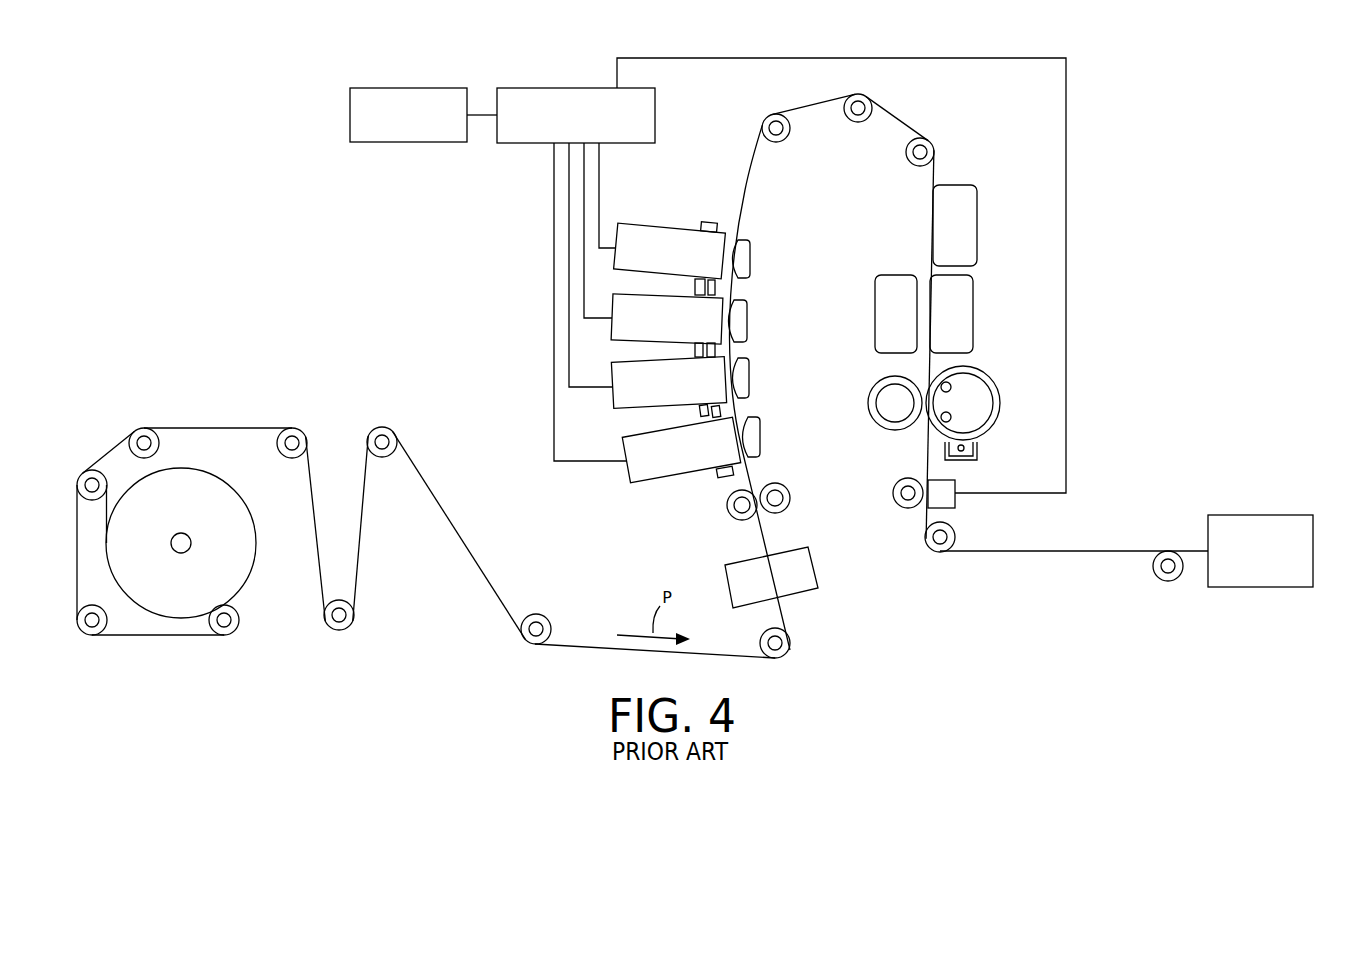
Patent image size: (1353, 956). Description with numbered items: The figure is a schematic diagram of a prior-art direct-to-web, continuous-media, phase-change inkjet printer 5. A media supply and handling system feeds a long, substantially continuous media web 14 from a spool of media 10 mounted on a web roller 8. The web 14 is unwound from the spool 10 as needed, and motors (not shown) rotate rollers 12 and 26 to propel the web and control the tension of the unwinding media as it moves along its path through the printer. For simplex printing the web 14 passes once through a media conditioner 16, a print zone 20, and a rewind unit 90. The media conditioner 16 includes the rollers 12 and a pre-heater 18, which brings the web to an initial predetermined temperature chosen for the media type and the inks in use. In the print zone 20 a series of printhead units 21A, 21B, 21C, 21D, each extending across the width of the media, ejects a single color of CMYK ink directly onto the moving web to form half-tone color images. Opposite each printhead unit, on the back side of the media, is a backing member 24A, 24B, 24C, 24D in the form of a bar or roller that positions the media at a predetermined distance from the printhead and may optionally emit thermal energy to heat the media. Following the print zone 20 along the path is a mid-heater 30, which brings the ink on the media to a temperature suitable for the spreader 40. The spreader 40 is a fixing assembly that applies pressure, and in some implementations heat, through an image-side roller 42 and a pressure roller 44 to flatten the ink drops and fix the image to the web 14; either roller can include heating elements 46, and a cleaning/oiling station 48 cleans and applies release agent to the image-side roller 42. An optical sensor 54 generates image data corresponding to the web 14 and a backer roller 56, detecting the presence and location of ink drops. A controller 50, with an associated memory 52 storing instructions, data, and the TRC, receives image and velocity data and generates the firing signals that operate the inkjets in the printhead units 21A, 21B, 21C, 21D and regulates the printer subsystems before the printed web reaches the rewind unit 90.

The inkjet printer 5 is at (294, 154).
The web roller 8 is at (182, 553).
The spool of media 10 is at (250, 510).
The rollers 12 is at (387, 457).
The media web 14 is at (210, 428).
The media conditioner 16 is at (540, 561).
The pre-heater 18 is at (817, 567).
The print zone 20 is at (541, 283).
The printhead unit 21A is at (682, 480).
The printhead unit 21B is at (637, 412).
The printhead unit 21C is at (632, 345).
The printhead unit 21D is at (636, 222).
The backing member 24A is at (761, 432).
The backing member 24B is at (750, 375).
The backing member 24C is at (748, 319).
The backing member 24D is at (752, 256).
The rollers 26 is at (760, 640).
The mid-heater 30 is at (996, 216).
The spreader 40 is at (996, 336).
The image-side roller 42 is at (998, 417).
The pressure roller 44 is at (887, 413).
The heating elements 46 is at (950, 414).
The cleaning/oiling station 48 is at (960, 460).
The controller 50 is at (577, 87).
The memory 52 is at (410, 87).
The optical sensor 54 is at (955, 502).
The backer roller 56 is at (893, 490).
The rewind unit 90 is at (1252, 515).